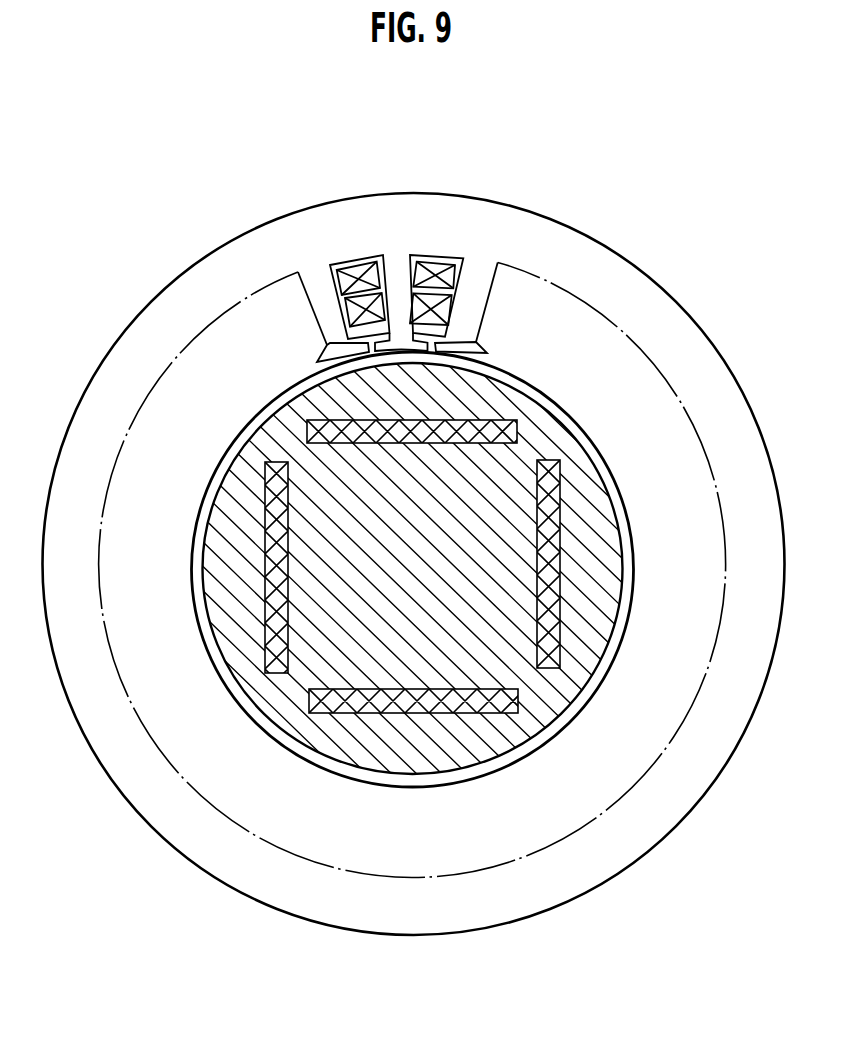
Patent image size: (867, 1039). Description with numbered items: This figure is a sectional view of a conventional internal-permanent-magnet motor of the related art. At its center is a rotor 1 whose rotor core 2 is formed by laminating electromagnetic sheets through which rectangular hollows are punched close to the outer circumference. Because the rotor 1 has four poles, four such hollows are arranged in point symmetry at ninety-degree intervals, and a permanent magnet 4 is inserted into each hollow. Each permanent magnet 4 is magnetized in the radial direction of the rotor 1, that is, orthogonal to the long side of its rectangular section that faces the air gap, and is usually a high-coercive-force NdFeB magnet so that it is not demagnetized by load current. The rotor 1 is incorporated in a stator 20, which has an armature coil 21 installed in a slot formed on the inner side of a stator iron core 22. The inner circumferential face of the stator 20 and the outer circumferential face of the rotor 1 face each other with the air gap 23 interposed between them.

The rotor 1 is at (550, 397).
The rotor core 2 is at (222, 597).
The permanent magnet 4 is at (462, 418).
The stator 20 is at (233, 240).
The armature coil 21 is at (355, 268).
The stator iron core 22 is at (108, 387).
The air gap 23 is at (237, 438).